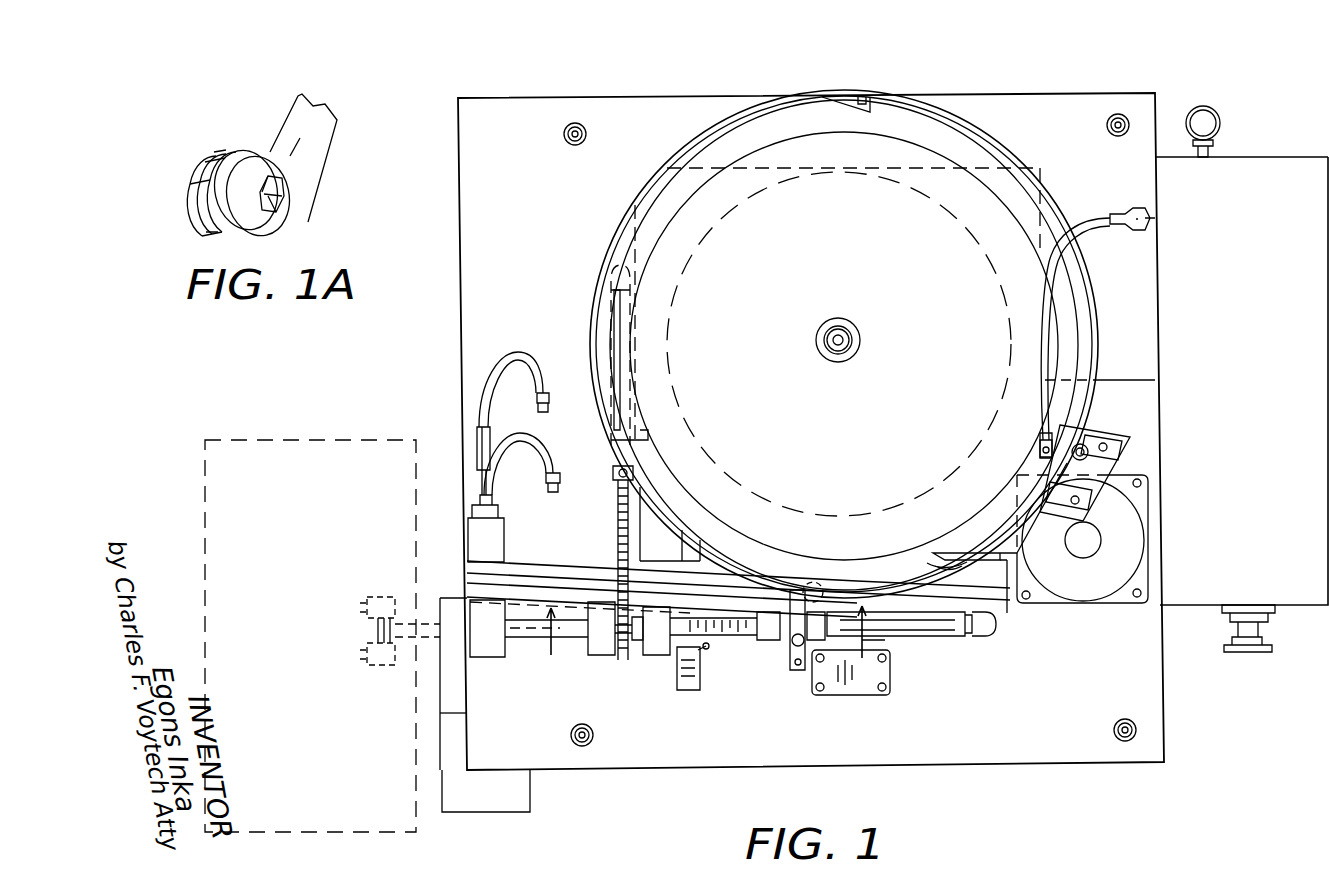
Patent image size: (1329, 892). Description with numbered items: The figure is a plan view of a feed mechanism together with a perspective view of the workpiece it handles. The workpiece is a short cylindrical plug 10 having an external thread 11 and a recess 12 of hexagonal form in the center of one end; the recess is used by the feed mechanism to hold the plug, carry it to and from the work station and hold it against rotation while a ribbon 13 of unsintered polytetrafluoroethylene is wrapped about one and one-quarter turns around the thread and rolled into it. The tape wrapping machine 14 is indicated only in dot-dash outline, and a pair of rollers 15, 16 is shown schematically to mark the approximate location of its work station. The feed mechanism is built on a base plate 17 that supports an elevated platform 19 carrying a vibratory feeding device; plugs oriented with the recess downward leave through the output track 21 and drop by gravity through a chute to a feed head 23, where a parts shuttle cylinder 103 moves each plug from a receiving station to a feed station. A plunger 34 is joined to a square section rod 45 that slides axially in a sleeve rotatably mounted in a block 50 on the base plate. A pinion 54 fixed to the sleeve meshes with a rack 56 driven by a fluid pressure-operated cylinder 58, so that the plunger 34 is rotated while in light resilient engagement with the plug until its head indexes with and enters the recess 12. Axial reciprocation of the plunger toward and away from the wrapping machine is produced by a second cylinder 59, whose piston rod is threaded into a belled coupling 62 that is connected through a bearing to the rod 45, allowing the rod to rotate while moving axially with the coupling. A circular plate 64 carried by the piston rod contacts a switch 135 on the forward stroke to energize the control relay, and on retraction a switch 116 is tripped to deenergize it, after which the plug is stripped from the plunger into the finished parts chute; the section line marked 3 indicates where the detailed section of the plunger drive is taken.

In FIG. 1A, the cylindrical plug 10 is at (270, 222).
In FIG. 1A, the external thread 11 is at (258, 148).
In FIG. 1A, the recess 12 is at (285, 184).
In FIG. 1A, the ribbon 13 is at (318, 135).
In FIG. 1, the tape wrapping machine 14 is at (312, 434).
In FIG. 1, the roller 15 is at (378, 597).
In FIG. 1, the roller 16 is at (375, 668).
In FIG. 1, the base plate 17 is at (1152, 703).
In FIG. 1, the elevated platform 19 is at (1025, 598).
In FIG. 1, the output track 21 is at (615, 243).
In FIG. 1, the feed head 23 is at (513, 541).
In FIG. 1, the section line 3 is at (729, 651).
In FIG. 1, the plunger 34 is at (527, 640).
In FIG. 1, the square section rod 45 is at (745, 630).
In FIG. 1, the block 50 is at (602, 655).
In FIG. 1, the pinion 54 is at (640, 645).
In FIG. 1, the rack 56 is at (617, 526).
In FIG. 1, the fluid pressure-operated cylinder 58 is at (607, 306).
In FIG. 1, the fluid pressure-operated cylinder 59 is at (944, 632).
In FIG. 1, the belled coupling 62 is at (770, 645).
In FIG. 1, the circular plate 64 is at (790, 658).
In FIG. 1, the cylinder 103 is at (480, 468).
In FIG. 1, the switch 116 is at (868, 696).
In FIG. 1, the switch 135 is at (690, 682).